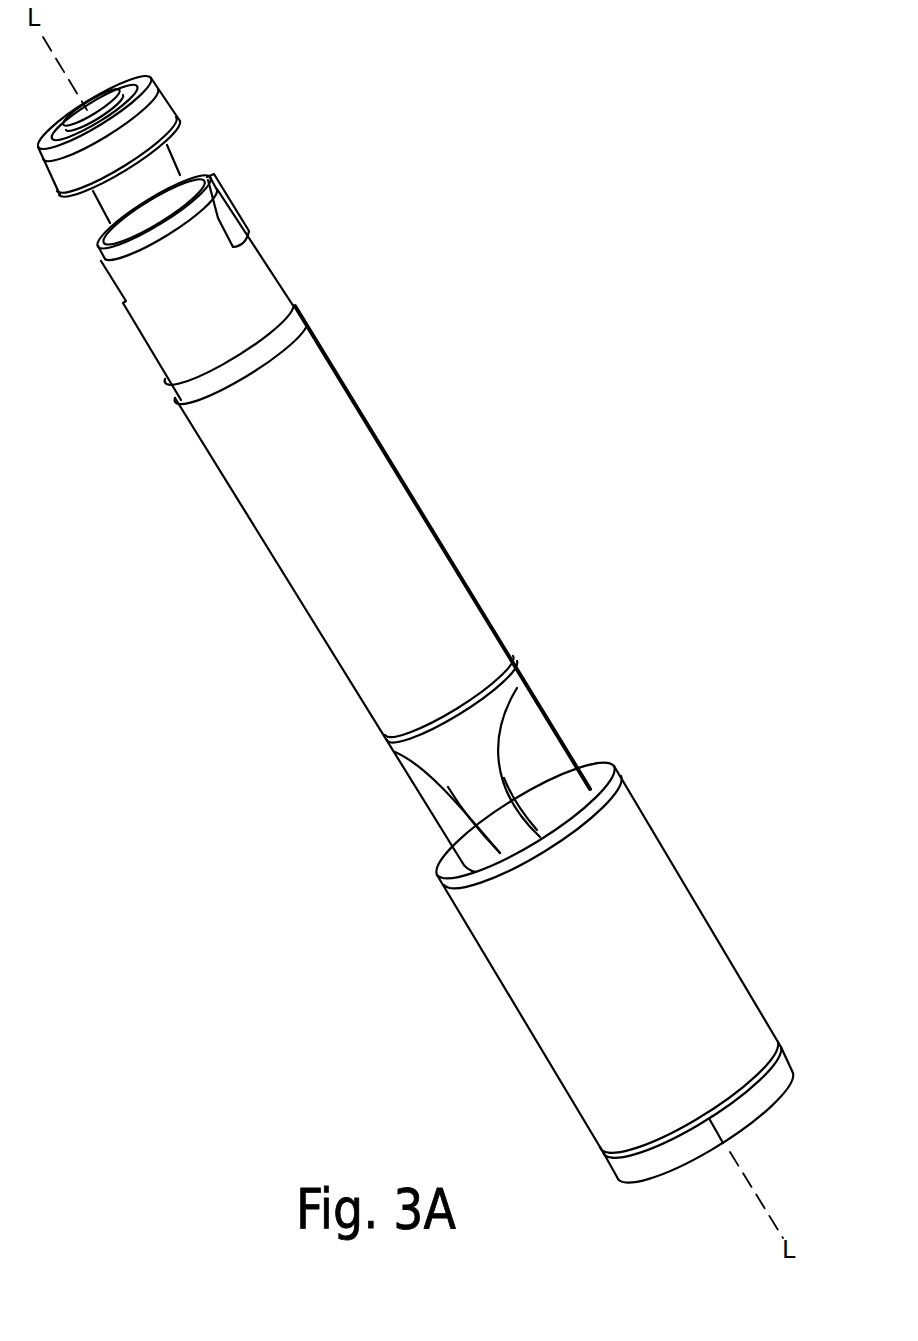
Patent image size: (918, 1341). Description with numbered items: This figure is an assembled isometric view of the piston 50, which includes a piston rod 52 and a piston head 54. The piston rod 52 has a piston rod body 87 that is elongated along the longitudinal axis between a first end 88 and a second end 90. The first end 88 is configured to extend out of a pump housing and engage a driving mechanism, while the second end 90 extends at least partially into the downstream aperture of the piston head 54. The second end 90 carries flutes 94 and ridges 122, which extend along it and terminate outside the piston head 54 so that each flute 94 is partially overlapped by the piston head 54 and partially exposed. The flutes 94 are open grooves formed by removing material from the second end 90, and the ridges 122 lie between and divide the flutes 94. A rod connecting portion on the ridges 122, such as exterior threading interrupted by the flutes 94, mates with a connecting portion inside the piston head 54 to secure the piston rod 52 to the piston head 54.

The piston 50 is at (626, 428).
The piston rod 52 is at (363, 480).
The piston head 54 is at (658, 937).
The piston rod body 87 is at (333, 563).
The first end 88 is at (243, 280).
The second end 90 is at (503, 687).
The flutes 94 is at (535, 778).
The ridges 122 is at (573, 752).